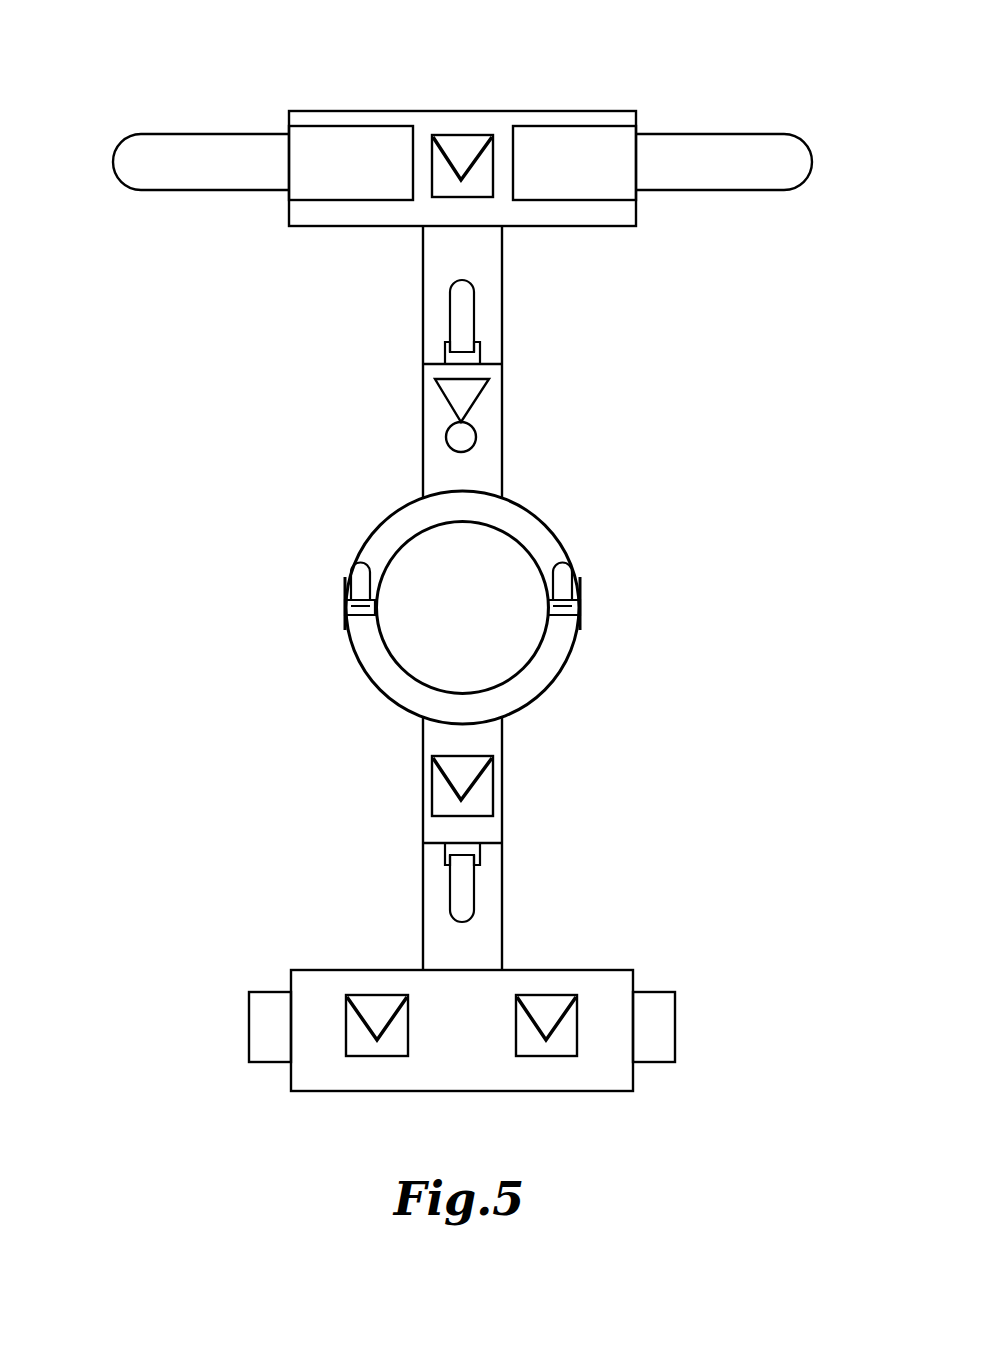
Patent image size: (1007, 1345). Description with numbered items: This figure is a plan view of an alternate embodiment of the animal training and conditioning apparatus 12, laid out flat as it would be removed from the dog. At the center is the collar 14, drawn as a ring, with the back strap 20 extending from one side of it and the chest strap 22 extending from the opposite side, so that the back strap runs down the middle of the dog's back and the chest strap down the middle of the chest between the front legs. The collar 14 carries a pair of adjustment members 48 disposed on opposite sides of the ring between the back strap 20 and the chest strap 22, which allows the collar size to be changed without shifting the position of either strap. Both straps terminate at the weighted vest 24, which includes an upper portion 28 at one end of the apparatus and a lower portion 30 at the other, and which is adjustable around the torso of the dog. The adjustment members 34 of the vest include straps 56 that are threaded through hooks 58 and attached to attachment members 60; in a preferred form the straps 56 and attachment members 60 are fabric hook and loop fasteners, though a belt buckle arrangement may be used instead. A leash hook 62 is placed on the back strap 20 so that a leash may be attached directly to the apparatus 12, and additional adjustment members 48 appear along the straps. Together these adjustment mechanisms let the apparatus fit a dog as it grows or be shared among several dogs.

The animal training and conditioning apparatus 12 is at (662, 373).
The collar 14 is at (543, 667).
The back strap 20 is at (488, 470).
The chest strap 22 is at (488, 737).
The weighted vest 24 is at (441, 112).
The upper portion 28 is at (520, 110).
The lower portion 30 is at (573, 1078).
The adjustment members 34 is at (208, 150).
The adjustment members 48 is at (474, 344).
The straps 56 is at (125, 175).
The hooks 58 is at (268, 992).
The attachment members 60 is at (330, 128).
The leash hook 62 is at (465, 418).